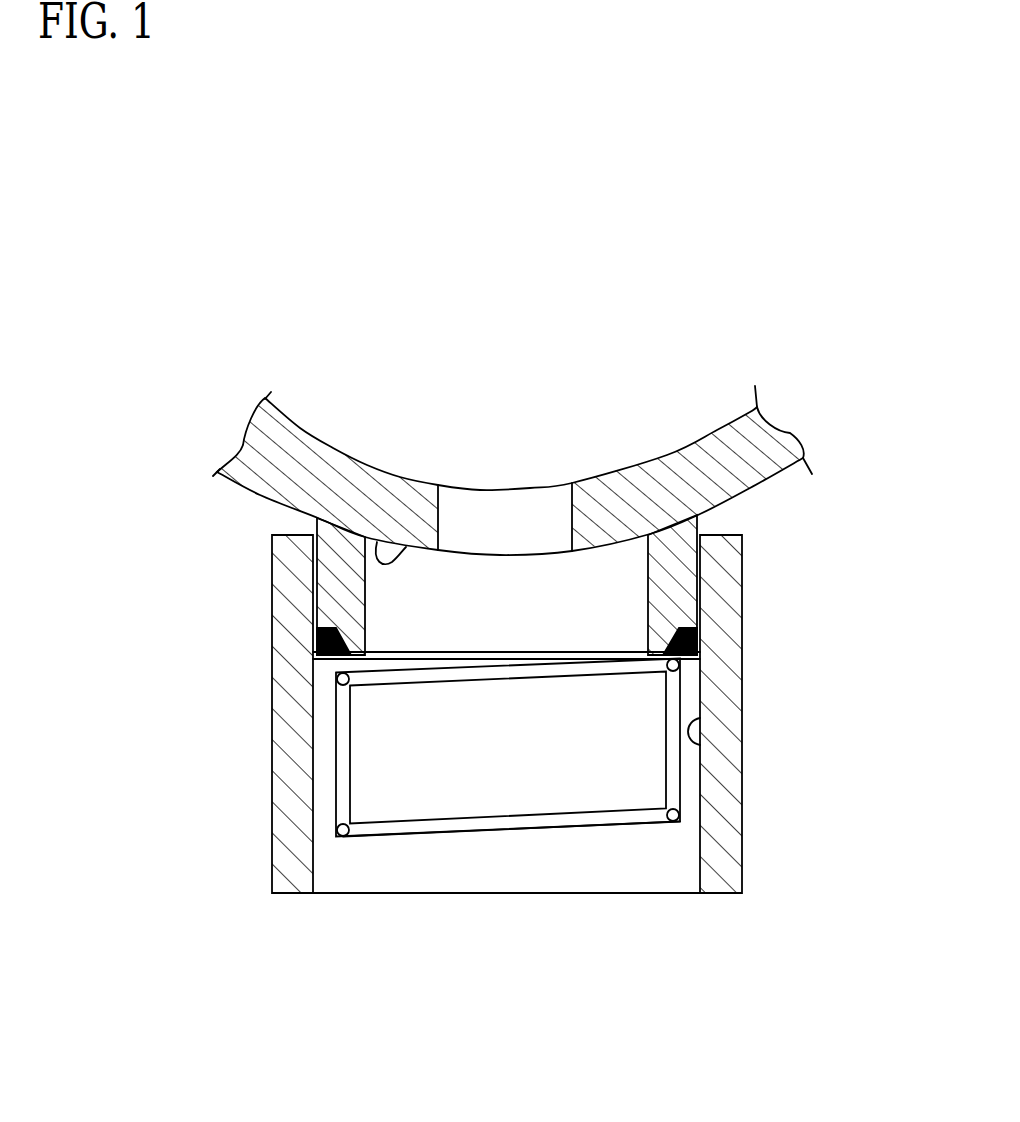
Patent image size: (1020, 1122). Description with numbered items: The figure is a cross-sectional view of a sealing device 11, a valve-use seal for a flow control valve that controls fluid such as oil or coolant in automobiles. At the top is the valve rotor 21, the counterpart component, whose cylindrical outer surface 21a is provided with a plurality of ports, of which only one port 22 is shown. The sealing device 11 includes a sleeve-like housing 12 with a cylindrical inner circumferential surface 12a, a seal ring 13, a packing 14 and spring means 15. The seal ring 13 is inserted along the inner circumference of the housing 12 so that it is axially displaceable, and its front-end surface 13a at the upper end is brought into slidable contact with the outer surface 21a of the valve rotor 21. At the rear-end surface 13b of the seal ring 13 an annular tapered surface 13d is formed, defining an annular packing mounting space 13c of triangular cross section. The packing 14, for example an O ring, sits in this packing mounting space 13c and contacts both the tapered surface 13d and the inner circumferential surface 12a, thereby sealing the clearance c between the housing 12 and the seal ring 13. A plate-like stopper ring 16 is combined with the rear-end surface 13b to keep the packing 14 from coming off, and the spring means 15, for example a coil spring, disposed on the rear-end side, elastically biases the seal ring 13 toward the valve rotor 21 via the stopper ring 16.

The sealing device 11 is at (318, 920).
The housing 12 is at (727, 707).
The inner circumferential surface 12a is at (703, 746).
The seal ring 13 is at (672, 565).
The front-end surface 13a is at (305, 473).
The rear-end surface 13b is at (357, 667).
The packing mounting space 13c is at (333, 667).
The tapered surface 13d is at (313, 636).
The clearance c is at (272, 575).
The packing 14 is at (683, 652).
The spring means 15 is at (553, 822).
The stopper ring 16 is at (683, 658).
The valve rotor 21 is at (258, 445).
The outer surface 21a is at (401, 548).
The port 22 is at (512, 508).